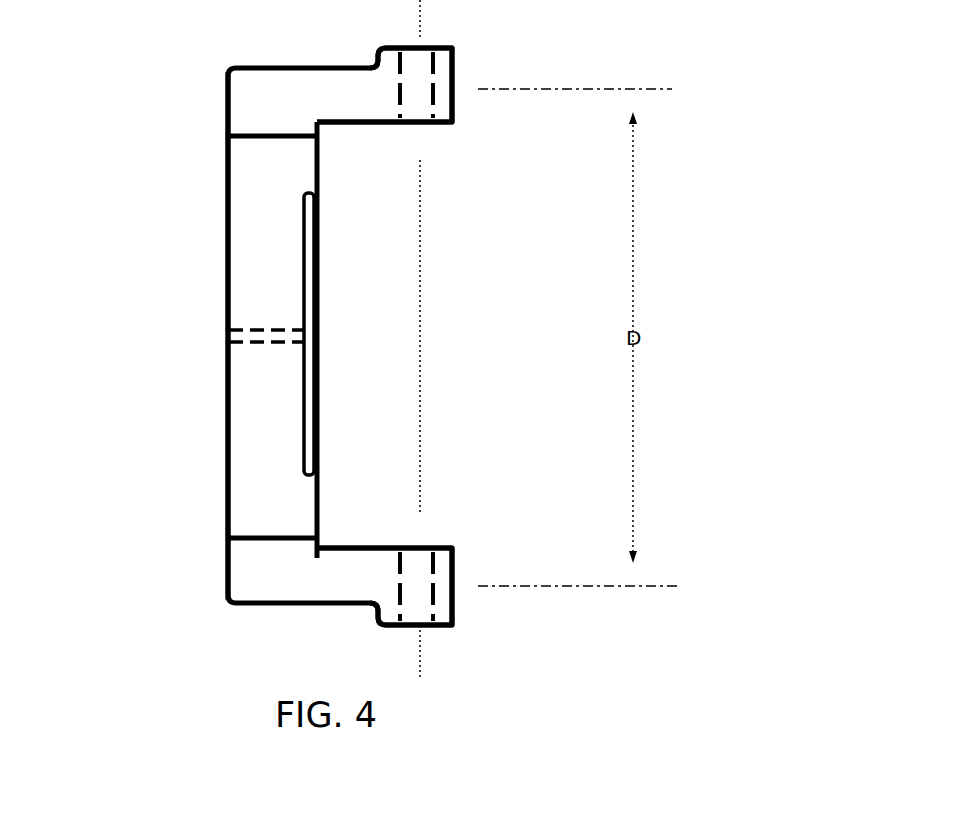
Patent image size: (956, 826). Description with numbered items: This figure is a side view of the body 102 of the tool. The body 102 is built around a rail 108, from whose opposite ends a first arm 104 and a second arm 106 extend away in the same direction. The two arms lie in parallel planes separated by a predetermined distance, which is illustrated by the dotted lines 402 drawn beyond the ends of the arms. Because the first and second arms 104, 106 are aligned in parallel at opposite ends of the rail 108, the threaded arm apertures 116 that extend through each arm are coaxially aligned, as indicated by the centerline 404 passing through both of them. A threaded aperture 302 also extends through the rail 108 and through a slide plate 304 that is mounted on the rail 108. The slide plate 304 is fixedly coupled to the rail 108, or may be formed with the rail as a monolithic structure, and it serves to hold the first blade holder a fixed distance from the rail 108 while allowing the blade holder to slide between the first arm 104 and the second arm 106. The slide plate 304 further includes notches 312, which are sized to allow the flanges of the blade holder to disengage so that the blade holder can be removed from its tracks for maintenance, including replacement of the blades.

The body 102 is at (129, 119).
The first arm 104 is at (456, 60).
The second arm 106 is at (456, 613).
The rail 108 is at (224, 213).
The arm apertures 116 is at (417, 124).
The threaded aperture 302 is at (224, 337).
The slide plate 304 is at (314, 247).
The notches 312 is at (337, 174).
The dotted lines 402 is at (598, 88).
The centerline 404 is at (422, 397).